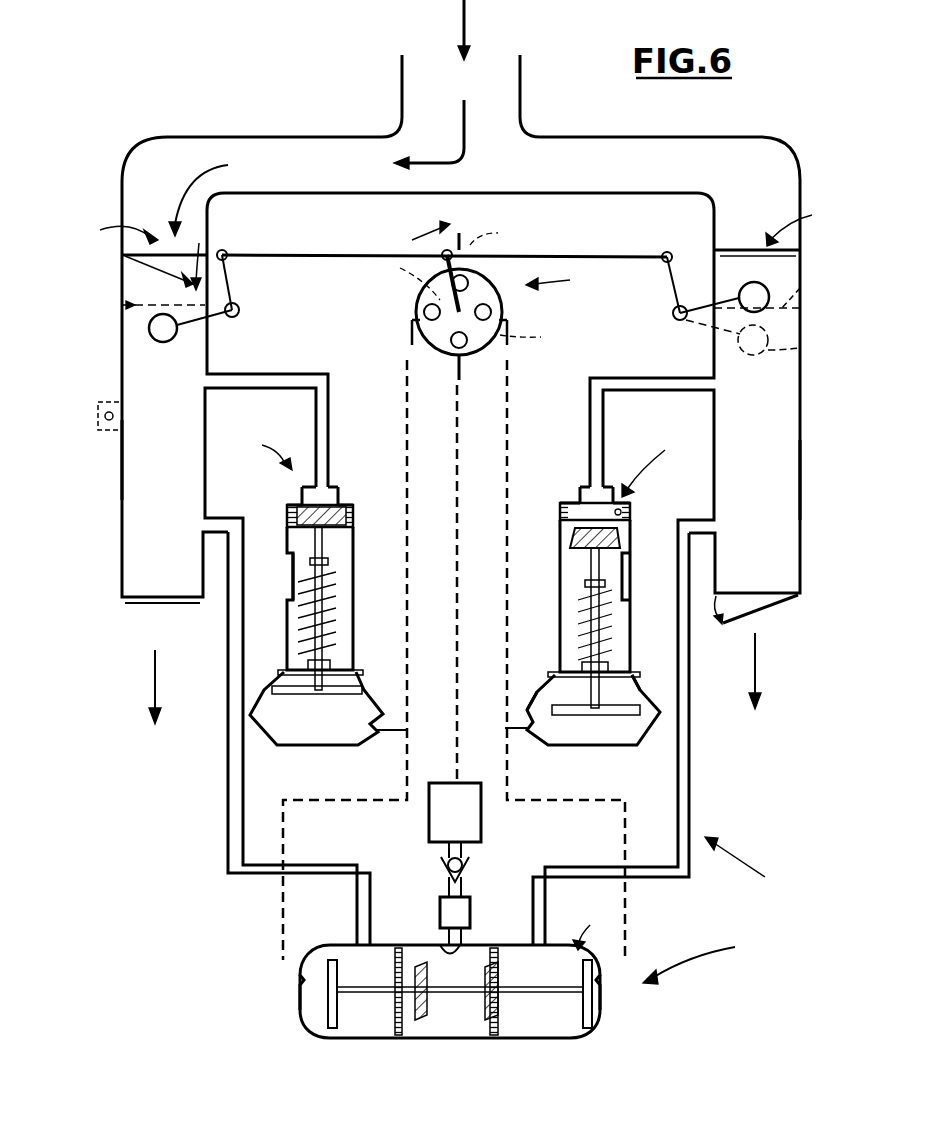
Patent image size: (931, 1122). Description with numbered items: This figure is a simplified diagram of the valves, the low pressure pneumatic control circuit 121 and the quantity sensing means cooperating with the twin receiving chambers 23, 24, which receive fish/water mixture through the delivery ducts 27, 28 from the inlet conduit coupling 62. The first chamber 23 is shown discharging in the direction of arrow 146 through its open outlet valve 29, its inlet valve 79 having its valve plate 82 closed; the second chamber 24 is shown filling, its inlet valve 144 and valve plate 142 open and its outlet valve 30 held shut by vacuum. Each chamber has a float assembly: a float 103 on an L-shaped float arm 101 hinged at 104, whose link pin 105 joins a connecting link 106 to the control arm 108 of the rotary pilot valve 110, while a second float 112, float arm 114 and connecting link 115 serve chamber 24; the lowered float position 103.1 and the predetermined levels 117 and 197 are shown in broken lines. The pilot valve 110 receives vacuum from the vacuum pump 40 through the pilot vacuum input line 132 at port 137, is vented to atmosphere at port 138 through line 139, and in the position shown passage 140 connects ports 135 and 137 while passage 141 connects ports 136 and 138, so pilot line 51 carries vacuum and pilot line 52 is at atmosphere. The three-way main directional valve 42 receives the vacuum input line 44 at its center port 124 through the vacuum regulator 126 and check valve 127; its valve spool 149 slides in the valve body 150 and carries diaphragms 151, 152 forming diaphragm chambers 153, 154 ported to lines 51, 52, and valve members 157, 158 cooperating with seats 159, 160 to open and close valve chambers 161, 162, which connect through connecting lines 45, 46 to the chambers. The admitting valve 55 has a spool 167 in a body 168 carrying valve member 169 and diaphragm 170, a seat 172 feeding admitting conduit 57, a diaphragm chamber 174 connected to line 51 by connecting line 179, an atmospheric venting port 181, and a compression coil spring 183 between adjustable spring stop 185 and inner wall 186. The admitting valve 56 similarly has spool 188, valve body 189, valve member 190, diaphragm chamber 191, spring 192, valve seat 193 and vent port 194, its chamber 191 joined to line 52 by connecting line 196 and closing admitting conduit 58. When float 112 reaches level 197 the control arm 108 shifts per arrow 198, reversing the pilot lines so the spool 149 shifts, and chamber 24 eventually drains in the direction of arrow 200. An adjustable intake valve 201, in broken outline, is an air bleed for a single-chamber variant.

The first receiving chamber 23 is at (795, 495).
The second receiving chamber 24 is at (122, 465).
The delivery duct 27 is at (712, 137).
The delivery duct 28 is at (345, 137).
The outlet valve 29 is at (790, 605).
The outlet valve 30 is at (185, 603).
The vacuum pump 40 is at (481, 815).
The main directional valve 42 is at (445, 1055).
The vacuum input line 44 is at (463, 941).
The first vacuum connecting line 45 is at (690, 566).
The second vacuum connecting line 46 is at (228, 563).
The first directional pilot line 51 is at (510, 430).
The second directional pilot line 52 is at (405, 406).
The first admitting valve 55 is at (612, 465).
The second admitting valve 56 is at (293, 468).
The first admitting conduit 57 is at (640, 387).
The second admitting conduit 58 is at (285, 374).
The inlet conduit coupling 62 is at (518, 85).
The inlet valve 79 is at (801, 223).
The valve plate 82 is at (762, 256).
The float arm 101 is at (681, 295).
The float 103 is at (758, 310).
The lowered float position 103.1 is at (800, 348).
The hinge 104 is at (675, 318).
The link pin 105 is at (667, 252).
The connecting link 106 is at (585, 255).
The control arm 108 is at (445, 262).
The rotary pilot valve 110 is at (512, 306).
The second float 112 is at (163, 342).
The float arm 114 is at (236, 318).
The connecting link 115 is at (258, 255).
The predetermined level 117 is at (800, 292).
The pneumatic control circuit 121 is at (752, 864).
The center port 124 is at (440, 949).
The vacuum regulator 126 is at (440, 898).
The check valve 127 is at (446, 866).
The pilot vacuum input line 132 is at (458, 525).
The output port 135 is at (491, 312).
The output port 136 is at (424, 313).
The vacuum input port 137 is at (462, 348).
The vacuum venting port 138 is at (469, 285).
The vent line 139 is at (500, 233).
The passage 140 is at (537, 334).
The passage 141 is at (400, 268).
The valve plate 142 is at (176, 232).
The inlet valve 144 is at (139, 240).
The discharge arrow 146 is at (757, 660).
The valve spool 149 is at (508, 986).
The valve body 150 is at (574, 925).
The first diaphragm 151 is at (587, 1036).
The second diaphragm 152 is at (315, 1035).
The first diaphragm chamber 153 is at (598, 1008).
The second diaphragm chamber 154 is at (304, 1000).
The first valve member 157 is at (481, 1012).
The second valve member 158 is at (432, 968).
The first valve seat 159 is at (499, 1012).
The second valve seat 160 is at (405, 1020).
The first valve chamber 161 is at (540, 1030).
The second valve chamber 162 is at (365, 1028).
The valve spool 167 is at (606, 618).
The valve body 168 is at (560, 605).
The valve member 169 is at (612, 530).
The diaphragm 170 is at (548, 740).
The valve seat 172 is at (622, 512).
The diaphragm chamber 174 is at (605, 745).
The short connecting line 179 is at (526, 727).
The atmospheric venting port 181 is at (624, 573).
The compression coil spring 183 is at (608, 657).
The adjustable spring stop 185 is at (592, 583).
The inner wall 186 is at (640, 680).
The valve spool 188 is at (335, 575).
The valve body 189 is at (350, 635).
The valve member 190 is at (335, 525).
The diaphragm chamber 191 is at (300, 733).
The spring 192 is at (338, 611).
The valve seat 193 is at (345, 505).
The atmospheric vent port 194 is at (293, 585).
The short connecting line 196 is at (390, 733).
The predetermined level 197 is at (120, 297).
The actuation arrow 198 is at (425, 225).
The drain arrow 200 is at (153, 685).
The adjustable intake valve 201 is at (106, 400).